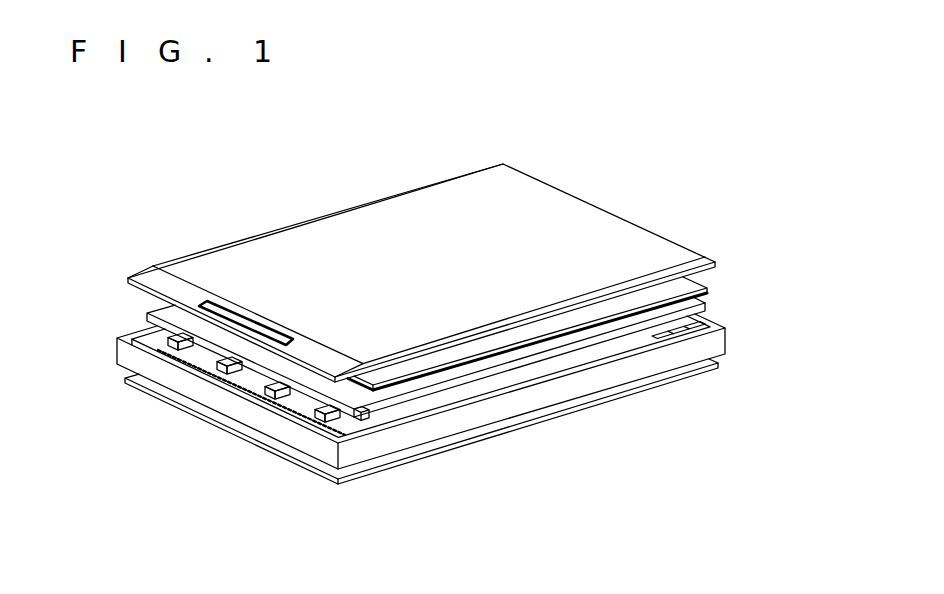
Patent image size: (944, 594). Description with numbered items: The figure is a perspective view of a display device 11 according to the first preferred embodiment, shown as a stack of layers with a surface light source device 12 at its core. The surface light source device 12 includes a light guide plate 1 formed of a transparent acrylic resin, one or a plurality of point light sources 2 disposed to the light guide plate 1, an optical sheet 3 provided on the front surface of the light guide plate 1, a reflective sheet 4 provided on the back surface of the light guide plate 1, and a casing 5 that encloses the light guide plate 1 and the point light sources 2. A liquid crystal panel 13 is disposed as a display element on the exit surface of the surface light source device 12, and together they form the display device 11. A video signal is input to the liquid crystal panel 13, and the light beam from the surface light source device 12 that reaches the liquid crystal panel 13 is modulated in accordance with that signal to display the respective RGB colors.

The display device 11 is at (475, 327).
The surface light source device 12 is at (448, 375).
The liquid crystal panel 13 is at (373, 218).
The light guide plate 1 is at (575, 347).
The point light sources 2 is at (172, 346).
The optical sheet 3 is at (692, 282).
The reflective sheet 4 is at (485, 433).
The casing 5 is at (540, 396).